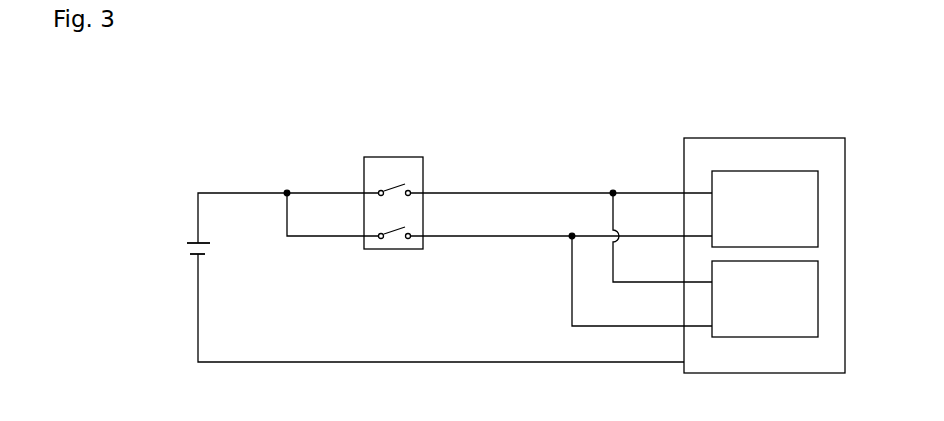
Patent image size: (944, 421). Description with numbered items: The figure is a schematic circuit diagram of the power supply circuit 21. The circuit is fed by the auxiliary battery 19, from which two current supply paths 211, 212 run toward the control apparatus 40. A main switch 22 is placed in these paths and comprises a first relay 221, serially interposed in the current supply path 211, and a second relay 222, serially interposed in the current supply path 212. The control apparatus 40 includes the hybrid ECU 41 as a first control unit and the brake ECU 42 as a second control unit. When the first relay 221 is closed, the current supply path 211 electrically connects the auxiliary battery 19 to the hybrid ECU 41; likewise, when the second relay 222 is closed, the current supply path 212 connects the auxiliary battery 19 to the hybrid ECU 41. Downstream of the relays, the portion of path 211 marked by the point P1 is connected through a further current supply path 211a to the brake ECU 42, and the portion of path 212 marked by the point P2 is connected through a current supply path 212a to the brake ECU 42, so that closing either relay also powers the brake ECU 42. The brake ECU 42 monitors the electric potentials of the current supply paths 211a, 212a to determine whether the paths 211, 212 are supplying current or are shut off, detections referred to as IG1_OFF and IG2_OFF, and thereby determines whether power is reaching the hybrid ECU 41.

The power supply circuit 21 is at (218, 148).
The auxiliary battery 19 is at (195, 243).
The main switch 22 is at (410, 157).
The second relay 222 is at (384, 190).
The first relay 221 is at (384, 234).
The current supply path 212 is at (463, 190).
The current supply path 211 is at (468, 239).
The current supply path 212a is at (613, 213).
The current supply path 211a is at (572, 309).
The point P2 is at (613, 190).
The point P1 is at (569, 238).
The control apparatus 40 is at (800, 137).
The hybrid ECU 41 is at (767, 171).
The brake ECU 42 is at (777, 337).